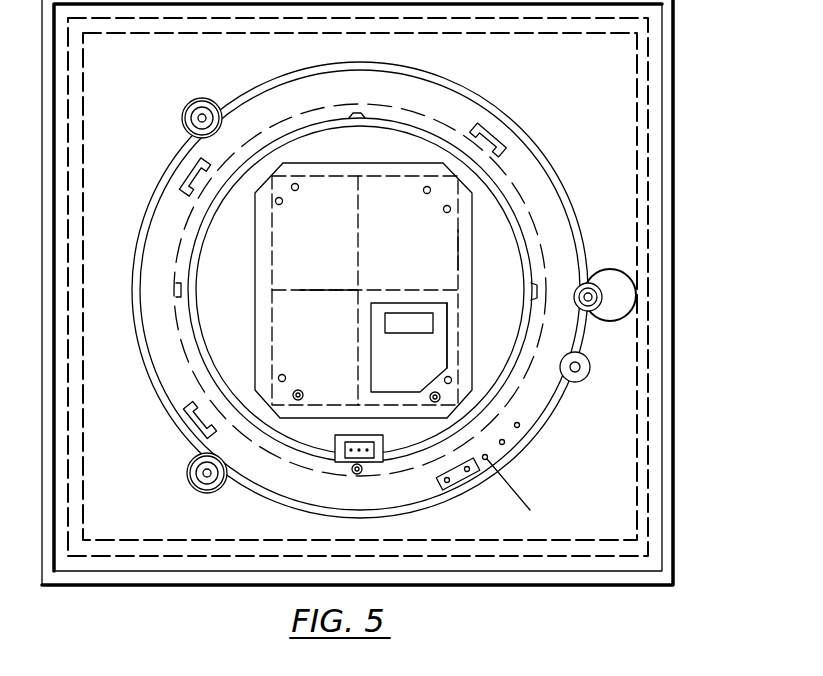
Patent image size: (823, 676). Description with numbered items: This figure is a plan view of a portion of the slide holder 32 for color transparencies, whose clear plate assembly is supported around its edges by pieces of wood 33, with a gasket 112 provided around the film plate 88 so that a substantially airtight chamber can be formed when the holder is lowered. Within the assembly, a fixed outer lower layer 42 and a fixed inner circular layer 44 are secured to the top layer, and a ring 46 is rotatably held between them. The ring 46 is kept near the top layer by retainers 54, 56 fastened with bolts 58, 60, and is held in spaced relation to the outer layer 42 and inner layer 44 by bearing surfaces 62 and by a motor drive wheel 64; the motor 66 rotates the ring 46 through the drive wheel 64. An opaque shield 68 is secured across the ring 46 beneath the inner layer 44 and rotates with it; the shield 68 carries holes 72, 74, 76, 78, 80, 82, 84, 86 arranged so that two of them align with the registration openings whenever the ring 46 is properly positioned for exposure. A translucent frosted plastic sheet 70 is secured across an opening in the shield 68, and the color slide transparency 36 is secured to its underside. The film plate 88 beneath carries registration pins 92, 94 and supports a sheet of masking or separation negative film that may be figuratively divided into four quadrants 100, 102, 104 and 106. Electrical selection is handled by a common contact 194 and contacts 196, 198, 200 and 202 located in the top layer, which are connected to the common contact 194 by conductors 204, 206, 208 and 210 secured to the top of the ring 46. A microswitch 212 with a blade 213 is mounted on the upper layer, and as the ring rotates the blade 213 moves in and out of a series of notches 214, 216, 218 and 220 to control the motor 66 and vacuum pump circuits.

The slide holder 32 is at (92, 590).
The pieces of wood 33 is at (180, 580).
The gasket 112 is at (152, 545).
The fixed outer lower layer 42 is at (620, 448).
The opaque shield 68 is at (332, 170).
The ring 46 is at (562, 247).
The notch 216 is at (178, 290).
The fixed inner circular layer 44 is at (483, 193).
The notch 220 is at (535, 290).
The notch 218 is at (360, 113).
The conductor 208 is at (190, 182).
The conductor 210 is at (490, 132).
The conductor 206 is at (185, 422).
The retainer 54 is at (188, 102).
The bolt 58 is at (197, 117).
The bearing surface 62 is at (202, 115).
The motor 66 is at (617, 285).
The motor drive wheel 64 is at (587, 282).
The bolt 60 is at (583, 364).
The retainer 56 is at (576, 382).
The film plate 88 is at (256, 331).
The quadrant 102 is at (277, 308).
The quadrant 104 is at (308, 183).
The quadrant 106 is at (450, 243).
The translucent plastic sheet 70 is at (380, 342).
The hole 74 is at (437, 392).
The quadrant 100 is at (449, 338).
The color slide transparency 36 is at (410, 312).
The hole 82 is at (299, 188).
The hole 84 is at (280, 205).
The hole 80 is at (423, 190).
The hole 78 is at (447, 213).
The hole 86 is at (282, 374).
The hole 72 is at (299, 390).
The registration pin 92 is at (304, 395).
The hole 76 is at (449, 377).
The registration pin 94 is at (435, 402).
The notch 214 is at (367, 476).
The blade 213 is at (367, 473).
The microswitch 212 is at (445, 490).
The conductor 204 is at (449, 482).
The common contact 194 is at (469, 471).
The contact 196 is at (530, 510).
The contact 198 is at (487, 459).
The contact 200 is at (504, 444).
The contact 202 is at (519, 427).